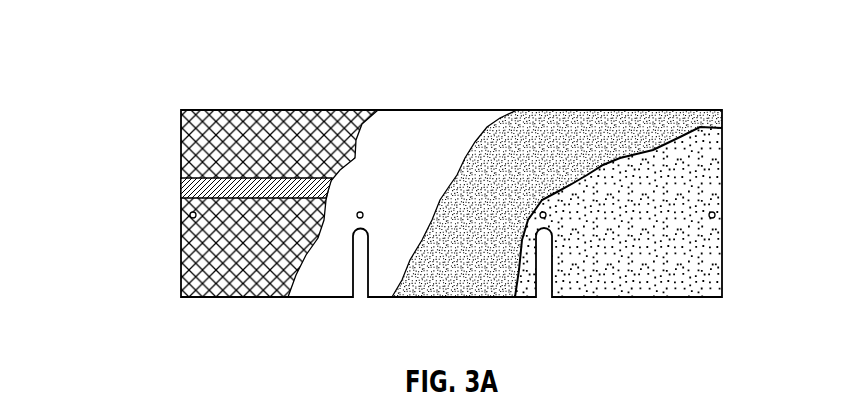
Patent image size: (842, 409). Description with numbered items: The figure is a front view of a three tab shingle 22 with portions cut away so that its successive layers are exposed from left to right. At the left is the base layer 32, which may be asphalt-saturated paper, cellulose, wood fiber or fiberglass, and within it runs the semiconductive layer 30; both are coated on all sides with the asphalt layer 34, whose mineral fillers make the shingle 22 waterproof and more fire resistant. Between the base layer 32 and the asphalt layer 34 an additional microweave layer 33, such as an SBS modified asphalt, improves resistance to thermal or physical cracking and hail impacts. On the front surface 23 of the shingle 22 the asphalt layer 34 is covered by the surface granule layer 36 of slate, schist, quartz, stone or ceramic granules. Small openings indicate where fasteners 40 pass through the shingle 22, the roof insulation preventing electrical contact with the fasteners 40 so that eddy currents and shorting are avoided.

The shingle 22 is at (132, 43).
The front surface 23 is at (613, 270).
The semiconductive layer 30 is at (182, 187).
The base layer 32 is at (346, 110).
The microweave layer 33 is at (435, 128).
The asphalt layer 34 is at (607, 127).
The surface granule layer 36 is at (693, 147).
The fasteners 40 is at (362, 211).